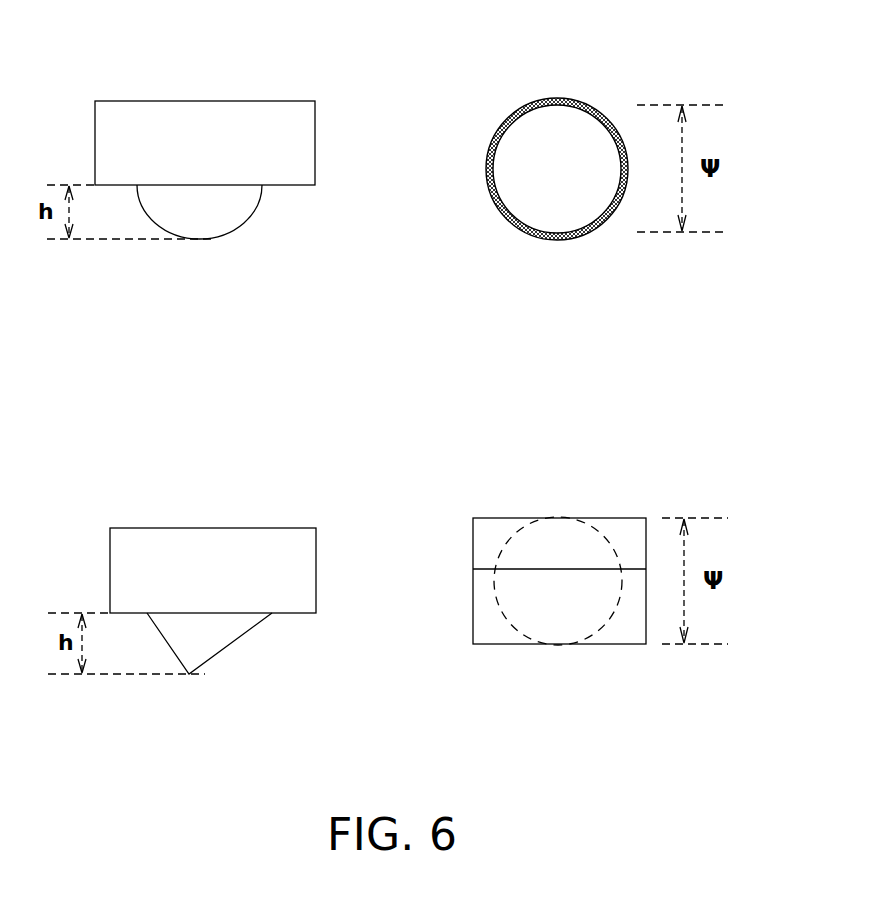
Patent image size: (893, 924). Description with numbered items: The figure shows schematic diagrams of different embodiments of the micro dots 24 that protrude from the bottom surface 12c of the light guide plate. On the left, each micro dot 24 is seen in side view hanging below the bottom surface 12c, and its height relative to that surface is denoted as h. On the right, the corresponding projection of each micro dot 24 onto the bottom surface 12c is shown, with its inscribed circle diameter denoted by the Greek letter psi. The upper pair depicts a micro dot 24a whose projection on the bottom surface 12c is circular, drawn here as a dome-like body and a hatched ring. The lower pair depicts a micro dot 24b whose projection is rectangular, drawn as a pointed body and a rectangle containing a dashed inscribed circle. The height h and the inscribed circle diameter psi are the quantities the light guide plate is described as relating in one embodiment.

The bottom surface 12c is at (283, 185).
The micro dot 24 is at (415, 369).
The micro dot 24a is at (580, 102).
The micro dot 24b is at (605, 518).